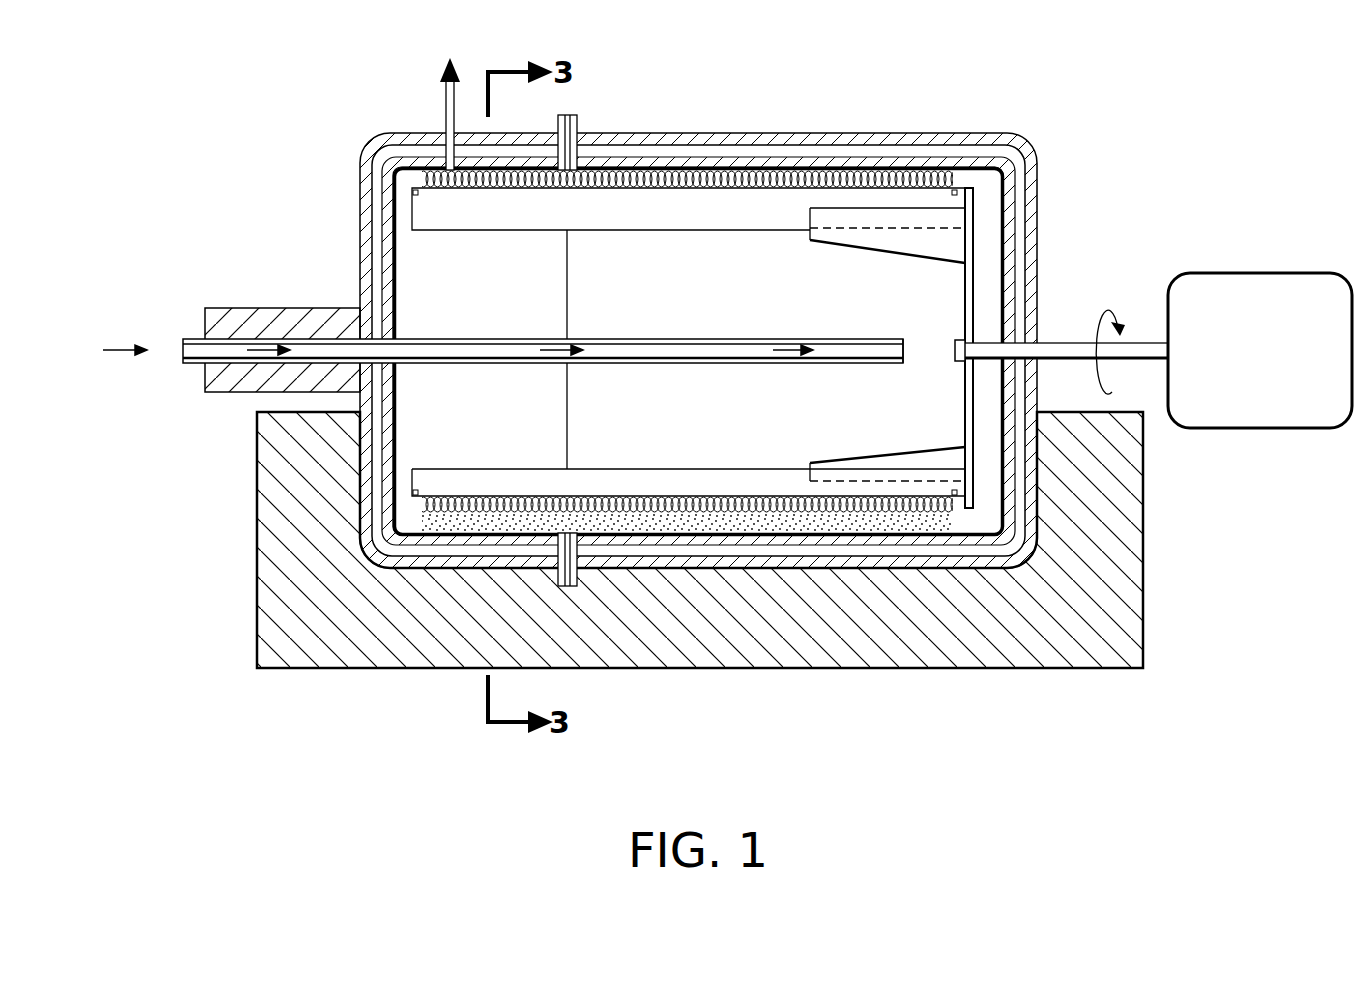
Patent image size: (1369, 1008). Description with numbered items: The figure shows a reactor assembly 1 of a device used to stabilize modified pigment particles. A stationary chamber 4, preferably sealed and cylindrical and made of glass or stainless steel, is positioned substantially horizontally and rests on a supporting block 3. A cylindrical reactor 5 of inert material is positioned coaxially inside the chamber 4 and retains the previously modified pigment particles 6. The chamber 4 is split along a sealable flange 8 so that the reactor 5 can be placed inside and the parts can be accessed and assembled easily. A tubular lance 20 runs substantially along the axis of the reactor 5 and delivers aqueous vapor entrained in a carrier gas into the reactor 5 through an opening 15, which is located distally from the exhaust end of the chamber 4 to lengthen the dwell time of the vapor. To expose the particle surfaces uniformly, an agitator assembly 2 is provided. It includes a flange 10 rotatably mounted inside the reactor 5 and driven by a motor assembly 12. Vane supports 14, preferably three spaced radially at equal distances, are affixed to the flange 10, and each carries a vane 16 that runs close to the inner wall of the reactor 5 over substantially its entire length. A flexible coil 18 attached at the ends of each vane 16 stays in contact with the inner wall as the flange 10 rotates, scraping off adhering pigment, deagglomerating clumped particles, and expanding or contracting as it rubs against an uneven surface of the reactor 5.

The reactor assembly 1 is at (892, 752).
The agitator assembly 2 is at (975, 238).
The supporting block 3 is at (1112, 668).
The stationary chamber 4 is at (1037, 275).
The cylindrical reactor 5 is at (1013, 482).
The pigment particles 6 is at (641, 526).
The sealable flange 8 is at (573, 116).
The flange 10 is at (963, 388).
The motor assembly 12 is at (1238, 272).
The vane support 14 is at (842, 242).
The opening 15 is at (908, 313).
The vane 16 is at (476, 232).
The flexible coil 18 is at (797, 170).
The tubular lance 20 is at (653, 337).